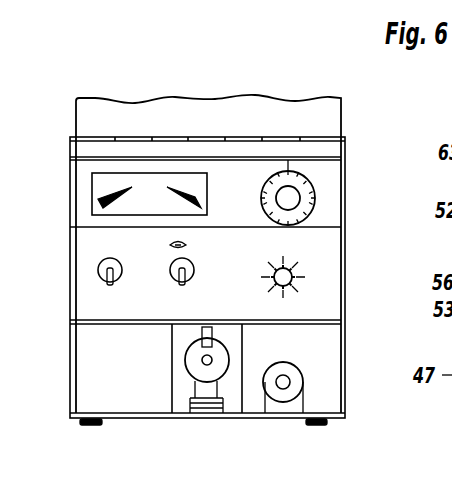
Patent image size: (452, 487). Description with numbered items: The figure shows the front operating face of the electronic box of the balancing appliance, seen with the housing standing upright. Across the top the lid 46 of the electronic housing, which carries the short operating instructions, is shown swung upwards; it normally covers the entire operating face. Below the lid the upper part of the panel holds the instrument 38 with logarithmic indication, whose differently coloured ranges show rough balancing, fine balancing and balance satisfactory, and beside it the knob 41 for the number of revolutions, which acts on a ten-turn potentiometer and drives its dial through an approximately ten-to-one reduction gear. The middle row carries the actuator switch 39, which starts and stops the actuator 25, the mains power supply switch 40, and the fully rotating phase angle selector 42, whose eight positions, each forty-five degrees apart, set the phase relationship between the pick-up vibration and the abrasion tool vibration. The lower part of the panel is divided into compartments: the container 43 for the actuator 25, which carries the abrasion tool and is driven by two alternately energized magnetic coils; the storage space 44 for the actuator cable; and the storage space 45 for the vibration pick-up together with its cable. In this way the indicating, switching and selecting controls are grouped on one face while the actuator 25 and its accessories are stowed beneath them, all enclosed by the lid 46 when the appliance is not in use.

The actuator 25 is at (185, 365).
The instrument with logarithmic indication 38 is at (100, 178).
The actuator switch 39 is at (172, 262).
The mains power supply switch 40 is at (100, 265).
The knob for the number of revolutions 41 is at (288, 198).
The phase angle selector 42 is at (293, 273).
The container for the actuator 43 is at (230, 353).
The storage space for the actuator cable 44 is at (85, 366).
The storage space for the vibration pick-up 45 is at (320, 382).
The lid of the electronic housing 46 is at (341, 108).